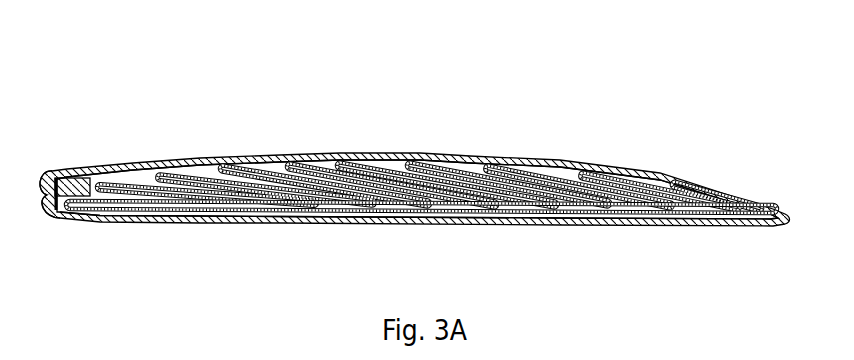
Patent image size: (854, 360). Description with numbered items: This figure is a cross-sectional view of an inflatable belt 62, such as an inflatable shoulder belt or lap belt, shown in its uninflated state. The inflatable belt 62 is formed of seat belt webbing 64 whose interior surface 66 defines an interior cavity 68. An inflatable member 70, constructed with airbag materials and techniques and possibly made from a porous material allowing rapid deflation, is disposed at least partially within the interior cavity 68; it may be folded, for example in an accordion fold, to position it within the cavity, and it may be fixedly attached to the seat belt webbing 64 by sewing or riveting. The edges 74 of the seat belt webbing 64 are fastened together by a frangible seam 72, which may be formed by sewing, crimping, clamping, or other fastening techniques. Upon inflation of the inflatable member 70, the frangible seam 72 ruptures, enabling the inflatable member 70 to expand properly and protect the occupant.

The inflatable belt 62 is at (198, 102).
The seat belt webbing 64 is at (343, 156).
The interior surface 66 is at (565, 158).
The interior cavity 68 is at (470, 165).
The inflatable member 70 is at (273, 205).
The frangible seam 72 is at (57, 212).
The edges 74 is at (77, 178).